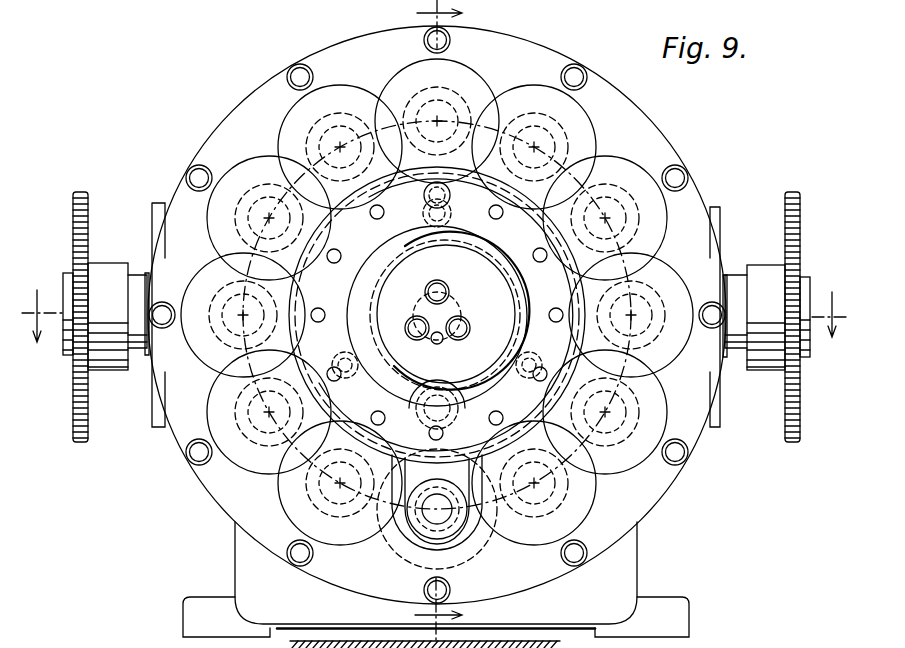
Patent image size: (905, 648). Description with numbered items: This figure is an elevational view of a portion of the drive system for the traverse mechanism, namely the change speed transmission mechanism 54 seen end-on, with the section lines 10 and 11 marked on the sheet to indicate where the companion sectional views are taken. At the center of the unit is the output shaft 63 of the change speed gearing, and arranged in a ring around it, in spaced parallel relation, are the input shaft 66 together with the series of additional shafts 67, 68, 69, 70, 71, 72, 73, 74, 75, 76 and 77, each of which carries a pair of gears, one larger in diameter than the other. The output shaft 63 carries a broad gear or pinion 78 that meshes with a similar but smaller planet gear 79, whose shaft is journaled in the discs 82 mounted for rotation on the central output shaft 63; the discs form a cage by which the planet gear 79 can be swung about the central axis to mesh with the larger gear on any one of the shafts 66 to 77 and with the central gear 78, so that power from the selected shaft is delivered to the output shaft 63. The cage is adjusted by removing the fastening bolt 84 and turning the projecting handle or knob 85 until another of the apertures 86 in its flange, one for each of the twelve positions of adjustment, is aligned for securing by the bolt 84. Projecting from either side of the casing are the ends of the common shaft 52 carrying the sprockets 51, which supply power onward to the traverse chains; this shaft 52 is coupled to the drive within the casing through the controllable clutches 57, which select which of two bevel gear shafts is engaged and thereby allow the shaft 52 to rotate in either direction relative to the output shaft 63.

The section line 10- 10 is at (429, 320).
The section line 11- 11 is at (435, 306).
The sprockets 51 is at (80, 192).
The common shaft 52 is at (138, 282).
The transmission mechanism 54 is at (285, 59).
The controllable clutches 57 is at (156, 210).
The output shaft 63 is at (455, 312).
The input shaft 66 is at (435, 509).
The additional shaft 67 is at (575, 500).
The additional shaft 68 is at (655, 416).
The additional shaft 69 is at (652, 305).
The additional shaft 70 is at (640, 205).
The additional shaft 71 is at (548, 95).
The additional shaft 72 is at (410, 80).
The additional shaft 73 is at (318, 128).
The additional shaft 74 is at (253, 213).
The additional shaft 75 is at (228, 330).
The additional shaft 76 is at (252, 420).
The additional shaft 77 is at (280, 500).
The broad gear or pinion 78 is at (487, 270).
The planet gear 79 is at (470, 404).
The discs 82 is at (595, 125).
The fastening bolt 84 is at (414, 199).
The handle or knob 85 is at (508, 284).
The apertures 86 is at (400, 412).